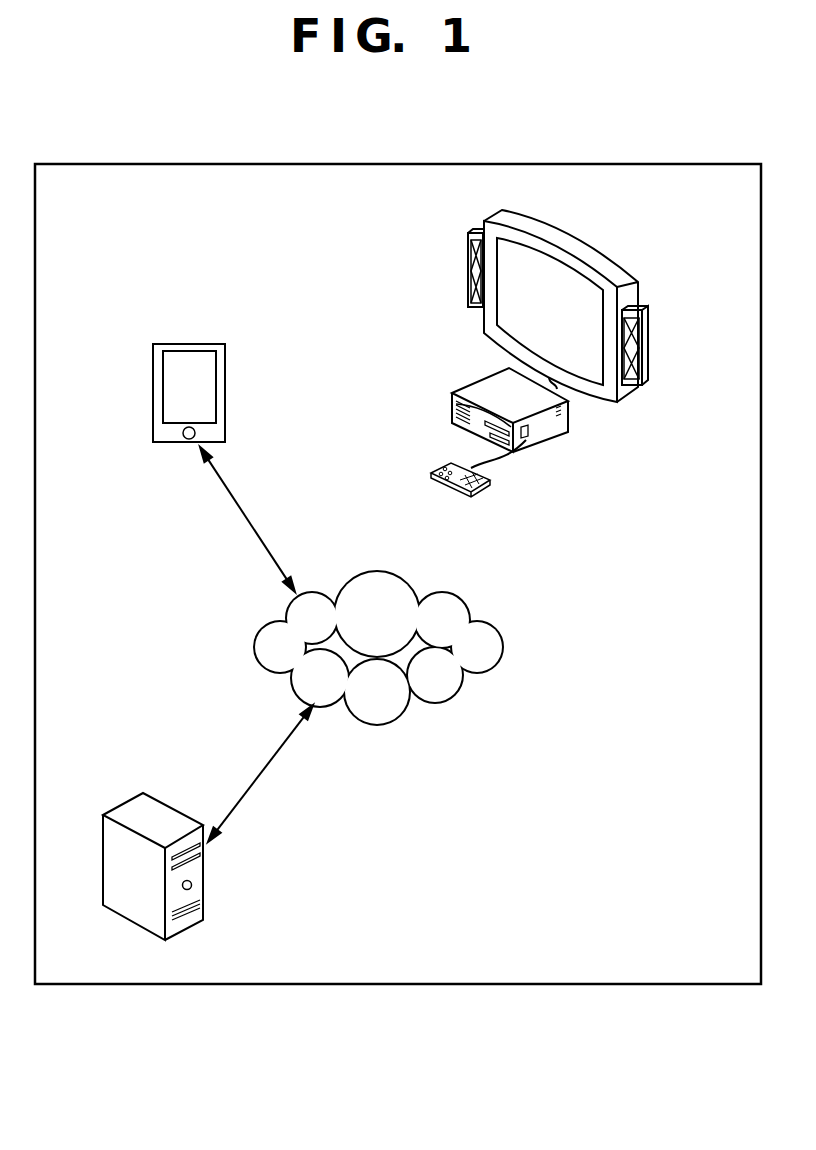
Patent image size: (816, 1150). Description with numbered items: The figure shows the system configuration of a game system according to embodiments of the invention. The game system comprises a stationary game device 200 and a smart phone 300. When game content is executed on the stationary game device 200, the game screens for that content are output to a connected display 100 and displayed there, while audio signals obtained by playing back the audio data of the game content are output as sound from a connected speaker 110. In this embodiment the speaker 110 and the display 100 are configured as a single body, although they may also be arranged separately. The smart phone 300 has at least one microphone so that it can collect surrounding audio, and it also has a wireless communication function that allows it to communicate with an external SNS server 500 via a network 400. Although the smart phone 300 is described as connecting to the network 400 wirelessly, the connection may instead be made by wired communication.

The display 100 is at (580, 248).
The speaker 110 is at (468, 268).
The stationary game device 200 is at (546, 428).
The smart phone 300 is at (202, 343).
The network 400 is at (397, 662).
The SNS server 500 is at (162, 813).